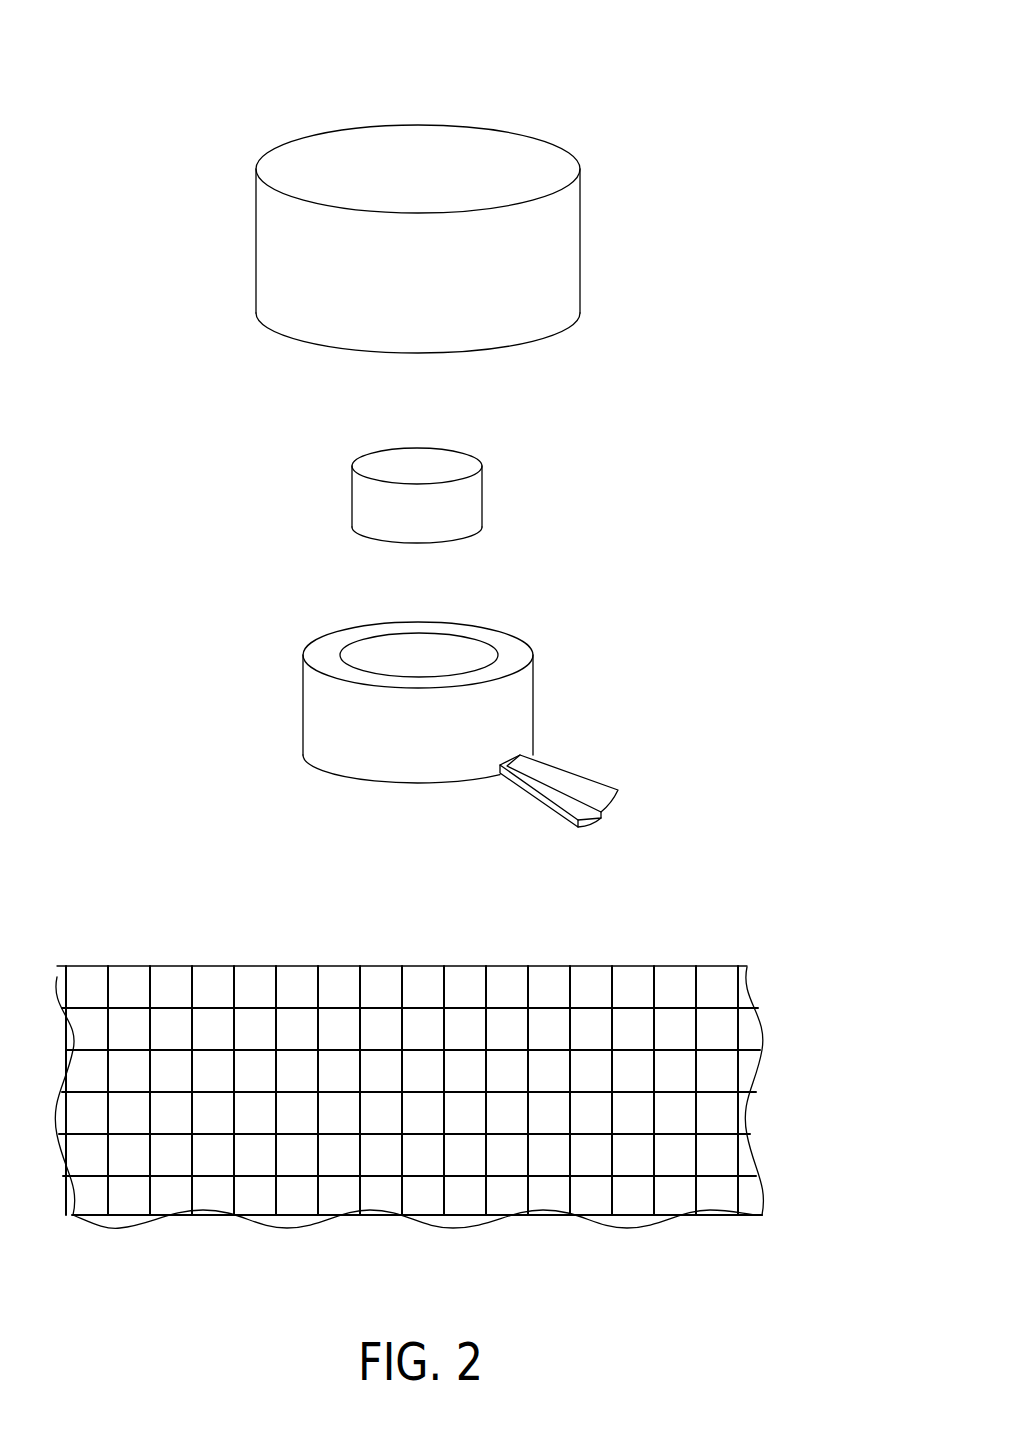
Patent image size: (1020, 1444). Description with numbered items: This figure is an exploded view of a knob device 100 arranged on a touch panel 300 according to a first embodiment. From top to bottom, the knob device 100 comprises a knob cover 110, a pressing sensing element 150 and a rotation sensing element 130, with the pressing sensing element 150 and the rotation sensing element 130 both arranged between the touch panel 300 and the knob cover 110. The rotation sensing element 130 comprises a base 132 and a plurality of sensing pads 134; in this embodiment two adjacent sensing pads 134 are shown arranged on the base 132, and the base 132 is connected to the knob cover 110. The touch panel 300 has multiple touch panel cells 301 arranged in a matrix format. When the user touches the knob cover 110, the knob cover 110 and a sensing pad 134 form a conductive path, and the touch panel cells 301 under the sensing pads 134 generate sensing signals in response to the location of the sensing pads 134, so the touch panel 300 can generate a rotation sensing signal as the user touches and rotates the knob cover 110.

The knob device 100 is at (617, 88).
The knob cover 110 is at (558, 253).
The pressing sensing element 150 is at (463, 497).
The rotation sensing element 130 is at (538, 733).
The base 132 is at (513, 720).
The sensing pads 134 is at (583, 784).
The touch panel 300 is at (717, 967).
The touch panel cells 301 is at (296, 982).